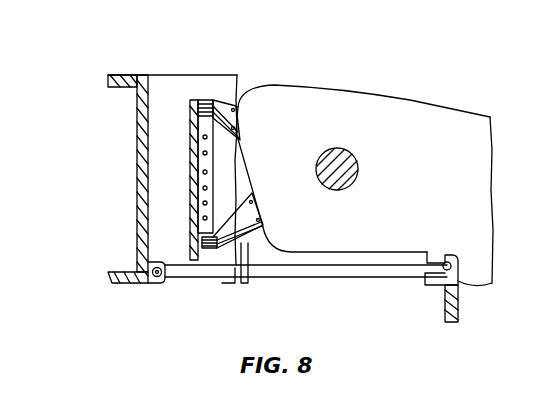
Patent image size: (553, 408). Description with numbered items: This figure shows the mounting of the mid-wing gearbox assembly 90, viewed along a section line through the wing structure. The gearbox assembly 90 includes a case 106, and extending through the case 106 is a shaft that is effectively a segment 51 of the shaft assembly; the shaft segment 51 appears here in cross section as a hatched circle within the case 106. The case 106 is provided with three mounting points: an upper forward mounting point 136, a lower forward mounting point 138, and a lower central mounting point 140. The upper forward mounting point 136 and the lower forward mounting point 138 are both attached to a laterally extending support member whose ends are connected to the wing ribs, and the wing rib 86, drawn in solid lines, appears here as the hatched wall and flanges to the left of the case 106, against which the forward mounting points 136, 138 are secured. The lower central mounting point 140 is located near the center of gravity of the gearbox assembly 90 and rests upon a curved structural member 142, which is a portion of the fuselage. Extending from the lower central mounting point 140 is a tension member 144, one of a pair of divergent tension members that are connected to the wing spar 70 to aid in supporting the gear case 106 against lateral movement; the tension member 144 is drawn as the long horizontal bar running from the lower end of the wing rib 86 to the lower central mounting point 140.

The wing spar 70 is at (137, 156).
The wing rib 86 is at (157, 75).
The upper forward mounting point 136 is at (228, 100).
The case 106 is at (327, 90).
The shaft segment 51 is at (355, 170).
The mid-wing gearbox assembly 90 is at (428, 82).
The lower forward mounting point 138 is at (246, 283).
The tension member 144 is at (316, 277).
The lower central mounting point 140 is at (458, 283).
The curved structural member 142 is at (462, 315).